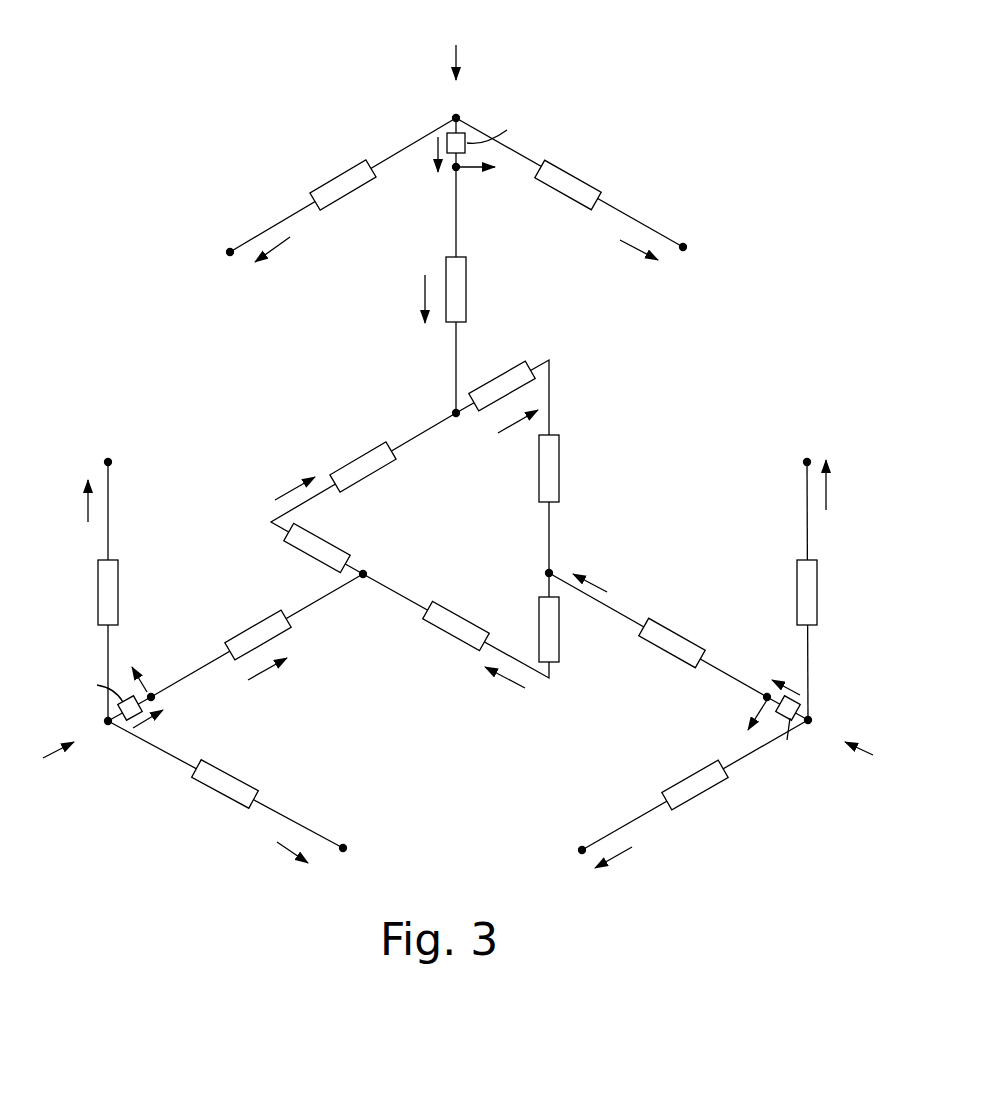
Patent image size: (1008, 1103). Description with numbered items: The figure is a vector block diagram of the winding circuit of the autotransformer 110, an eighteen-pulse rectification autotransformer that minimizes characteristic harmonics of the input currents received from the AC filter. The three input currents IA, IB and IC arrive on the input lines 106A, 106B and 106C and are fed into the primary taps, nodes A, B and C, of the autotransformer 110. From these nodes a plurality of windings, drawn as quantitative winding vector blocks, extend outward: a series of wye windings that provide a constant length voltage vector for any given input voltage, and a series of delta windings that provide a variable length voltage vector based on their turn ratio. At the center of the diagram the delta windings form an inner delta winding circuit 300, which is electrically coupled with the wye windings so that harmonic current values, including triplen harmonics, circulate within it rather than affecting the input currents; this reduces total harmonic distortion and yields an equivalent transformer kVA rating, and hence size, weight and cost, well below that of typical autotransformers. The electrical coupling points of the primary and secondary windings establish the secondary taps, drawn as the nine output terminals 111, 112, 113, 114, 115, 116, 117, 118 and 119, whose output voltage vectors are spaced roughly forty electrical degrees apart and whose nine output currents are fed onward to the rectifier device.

The autotransformer 110 is at (167, 127).
The input line 106A is at (490, 143).
The input line 106B is at (808, 720).
The input line 106C is at (108, 721).
The output terminal 111 is at (319, 196).
The output terminal 112 is at (468, 180).
The output terminal 113 is at (597, 195).
The output terminal 114 is at (823, 575).
The output terminal 115 is at (675, 663).
The output terminal 116 is at (671, 797).
The output terminal 117 is at (252, 798).
The output terminal 118 is at (237, 638).
The output terminal 119 is at (104, 577).
The inner delta winding circuit 300 is at (392, 593).